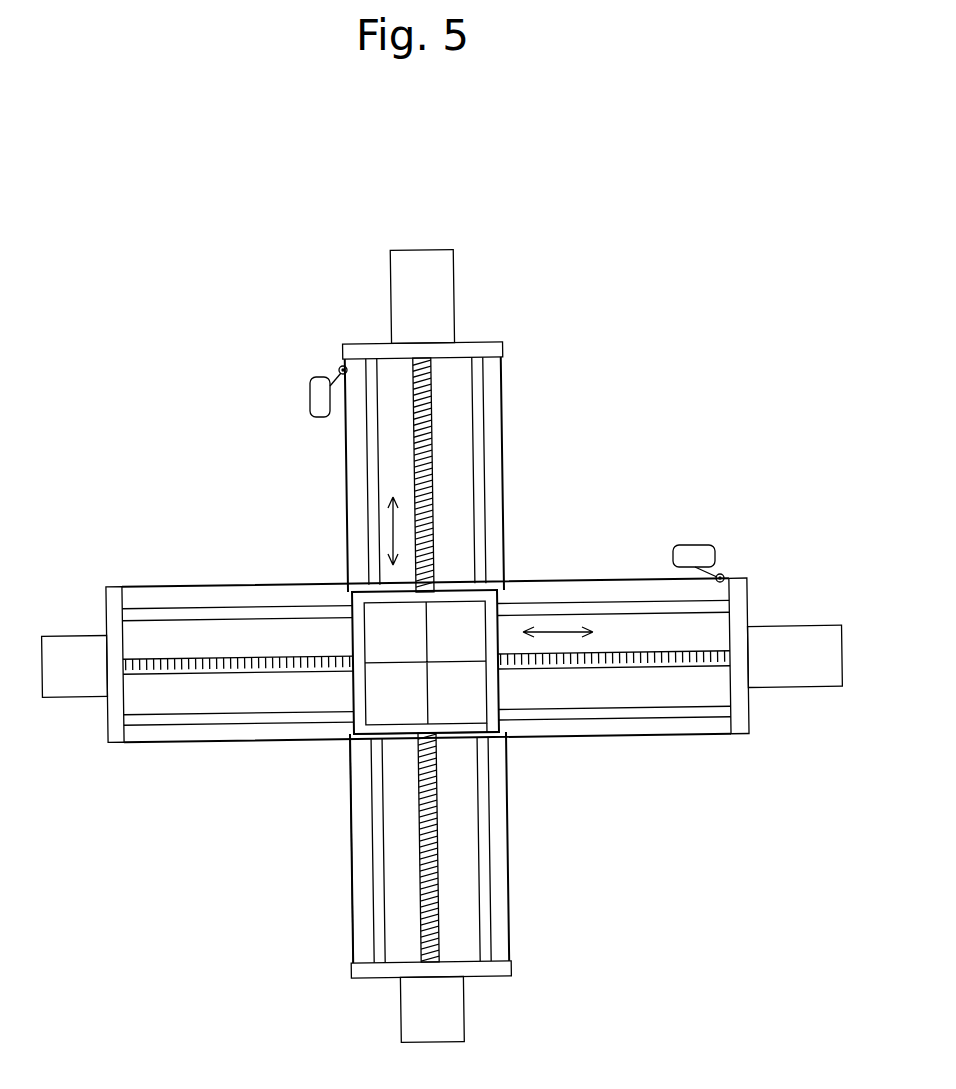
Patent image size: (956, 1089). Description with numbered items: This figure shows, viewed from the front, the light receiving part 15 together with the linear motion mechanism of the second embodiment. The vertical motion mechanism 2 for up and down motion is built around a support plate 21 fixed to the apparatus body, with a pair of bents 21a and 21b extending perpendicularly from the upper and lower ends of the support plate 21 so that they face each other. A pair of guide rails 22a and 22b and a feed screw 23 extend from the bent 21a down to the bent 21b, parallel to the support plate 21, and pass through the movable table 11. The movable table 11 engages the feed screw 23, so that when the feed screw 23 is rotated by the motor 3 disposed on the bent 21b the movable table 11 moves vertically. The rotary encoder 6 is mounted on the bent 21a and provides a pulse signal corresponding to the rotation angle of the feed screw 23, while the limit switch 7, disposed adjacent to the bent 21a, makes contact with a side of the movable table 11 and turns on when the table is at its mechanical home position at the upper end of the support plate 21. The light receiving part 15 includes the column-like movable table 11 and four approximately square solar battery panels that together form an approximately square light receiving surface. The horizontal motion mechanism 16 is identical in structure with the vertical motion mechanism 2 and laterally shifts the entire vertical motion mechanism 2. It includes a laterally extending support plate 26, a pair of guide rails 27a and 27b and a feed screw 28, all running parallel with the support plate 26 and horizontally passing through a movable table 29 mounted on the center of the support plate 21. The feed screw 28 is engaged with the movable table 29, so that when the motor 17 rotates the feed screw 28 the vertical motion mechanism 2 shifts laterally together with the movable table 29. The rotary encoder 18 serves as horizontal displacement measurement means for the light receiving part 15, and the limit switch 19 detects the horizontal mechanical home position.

The vertical motion mechanism 2 is at (331, 837).
The motor 3 is at (400, 1030).
The rotary encoder 6 is at (455, 267).
The limit switch 7 is at (310, 392).
The movable table 11 is at (488, 608).
The light receiving part 15 is at (375, 710).
The horizontal motion mechanism 16 is at (178, 562).
The motor 17 is at (55, 637).
The rotary encoder 18 is at (822, 690).
The limit switch 19 is at (697, 543).
The support plate 21 is at (345, 468).
The bent 21a is at (503, 352).
The bent 21b is at (352, 975).
The guide rail 22a is at (375, 878).
The guide rail 22b is at (485, 407).
The feed screw 23 is at (432, 468).
The support plate 26 is at (620, 578).
The guide rail 27a is at (265, 607).
The guide rail 27b is at (688, 712).
The feed screw 28 is at (620, 672).
The movable table 29 is at (493, 742).